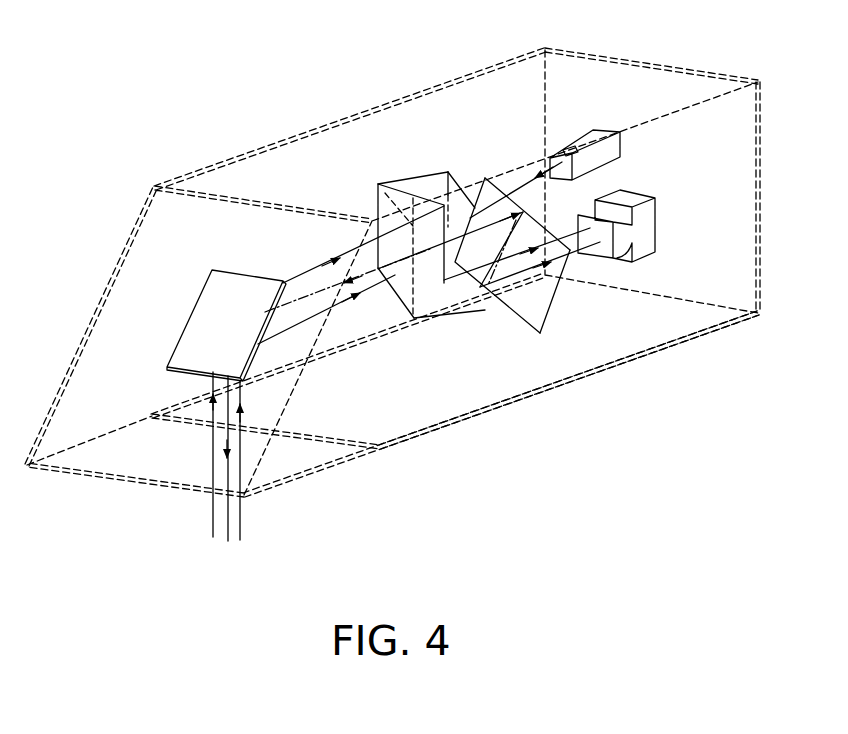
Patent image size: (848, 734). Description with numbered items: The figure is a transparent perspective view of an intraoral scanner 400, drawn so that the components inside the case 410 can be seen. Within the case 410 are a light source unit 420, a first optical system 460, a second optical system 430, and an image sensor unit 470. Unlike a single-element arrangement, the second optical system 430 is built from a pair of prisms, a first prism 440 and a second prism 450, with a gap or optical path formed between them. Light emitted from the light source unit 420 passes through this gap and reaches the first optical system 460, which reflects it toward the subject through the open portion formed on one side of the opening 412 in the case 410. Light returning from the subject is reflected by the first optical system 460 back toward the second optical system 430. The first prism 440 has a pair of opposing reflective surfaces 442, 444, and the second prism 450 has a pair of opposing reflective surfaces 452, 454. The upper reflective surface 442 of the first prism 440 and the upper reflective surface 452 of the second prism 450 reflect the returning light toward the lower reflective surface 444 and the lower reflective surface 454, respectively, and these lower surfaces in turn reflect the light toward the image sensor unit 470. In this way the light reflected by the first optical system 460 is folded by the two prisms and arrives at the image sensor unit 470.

The intraoral scanner 400 is at (96, 112).
The case 410 is at (105, 288).
The opening 412 is at (298, 485).
The light source unit 420 is at (577, 148).
The second optical system 430 is at (525, 474).
The first prism 440 is at (460, 313).
The upper reflective surface of the first prism 442 is at (423, 187).
The lower reflective surface of the first prism 444 is at (414, 318).
The second prism 450 is at (498, 320).
The upper reflective surface of the second prism 452 is at (515, 200).
The lower reflective surface of the second prism 454 is at (515, 313).
The first optical system 460 is at (232, 272).
The image sensor unit 470 is at (632, 262).